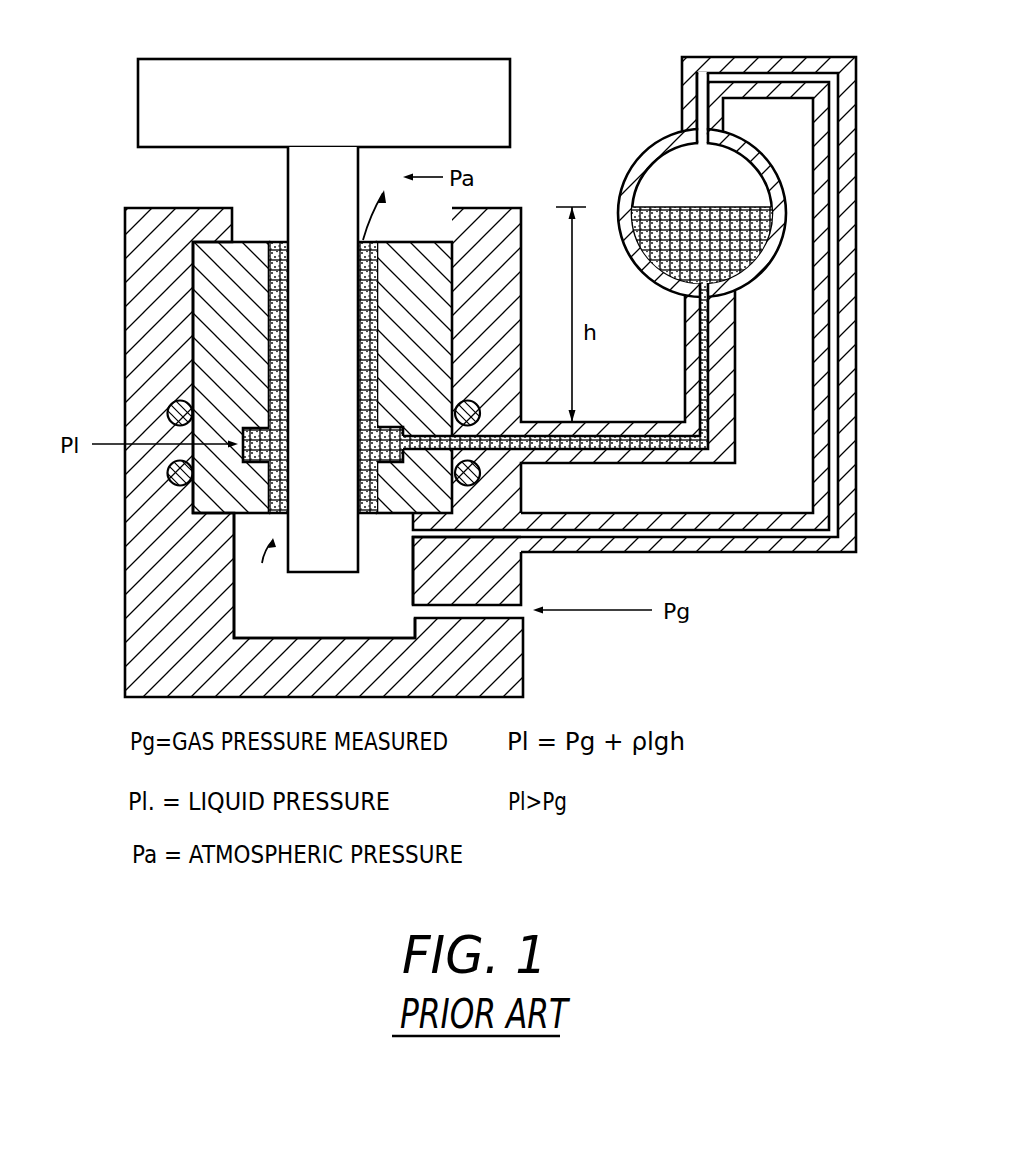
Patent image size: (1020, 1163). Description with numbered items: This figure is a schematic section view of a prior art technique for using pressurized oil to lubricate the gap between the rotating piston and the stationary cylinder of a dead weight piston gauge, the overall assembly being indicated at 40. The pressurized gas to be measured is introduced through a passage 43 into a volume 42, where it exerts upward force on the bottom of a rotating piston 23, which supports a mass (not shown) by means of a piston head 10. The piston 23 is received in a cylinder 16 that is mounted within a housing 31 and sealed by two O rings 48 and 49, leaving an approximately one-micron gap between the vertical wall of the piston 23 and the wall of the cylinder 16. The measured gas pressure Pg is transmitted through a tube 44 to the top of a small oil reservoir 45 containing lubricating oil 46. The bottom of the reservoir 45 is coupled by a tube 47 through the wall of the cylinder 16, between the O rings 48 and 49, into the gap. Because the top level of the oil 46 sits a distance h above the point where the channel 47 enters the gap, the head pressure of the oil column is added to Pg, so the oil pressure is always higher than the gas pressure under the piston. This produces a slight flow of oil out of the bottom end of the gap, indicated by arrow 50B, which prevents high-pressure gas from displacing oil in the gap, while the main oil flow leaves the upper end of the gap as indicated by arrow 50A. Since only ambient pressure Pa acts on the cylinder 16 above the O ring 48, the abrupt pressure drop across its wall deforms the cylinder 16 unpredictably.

The piston head 10 is at (355, 83).
The cylinder 16 is at (222, 318).
The rotating piston 23 is at (316, 542).
The housing 31 is at (150, 528).
The prior-art pressure measuring device 40 is at (446, 419).
The volume 42 is at (273, 607).
The passage 43 is at (468, 606).
The tube 44 is at (817, 553).
The oil reservoir 45 is at (645, 142).
The lubricating oil 46 is at (727, 207).
The tube 47 is at (606, 421).
The O ring 48 is at (167, 412).
The O ring 49 is at (167, 467).
The arrow 50A is at (283, 240).
The arrow 50B is at (362, 515).